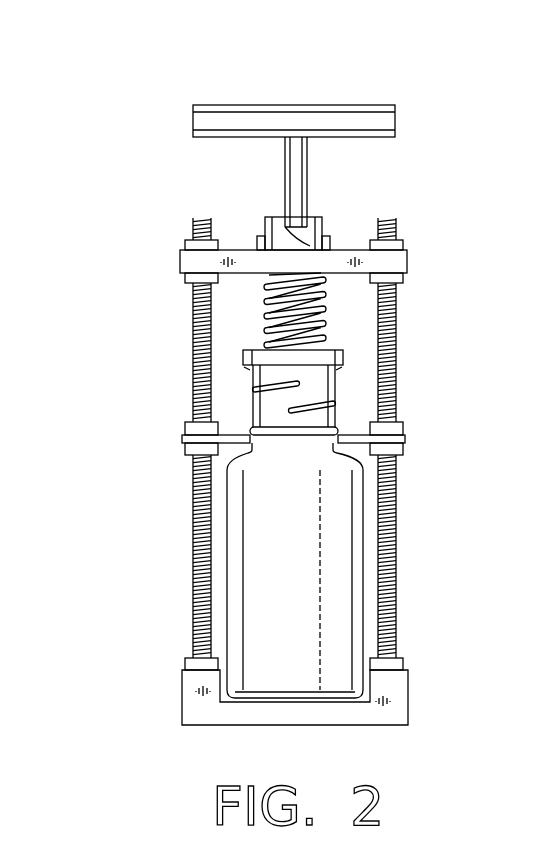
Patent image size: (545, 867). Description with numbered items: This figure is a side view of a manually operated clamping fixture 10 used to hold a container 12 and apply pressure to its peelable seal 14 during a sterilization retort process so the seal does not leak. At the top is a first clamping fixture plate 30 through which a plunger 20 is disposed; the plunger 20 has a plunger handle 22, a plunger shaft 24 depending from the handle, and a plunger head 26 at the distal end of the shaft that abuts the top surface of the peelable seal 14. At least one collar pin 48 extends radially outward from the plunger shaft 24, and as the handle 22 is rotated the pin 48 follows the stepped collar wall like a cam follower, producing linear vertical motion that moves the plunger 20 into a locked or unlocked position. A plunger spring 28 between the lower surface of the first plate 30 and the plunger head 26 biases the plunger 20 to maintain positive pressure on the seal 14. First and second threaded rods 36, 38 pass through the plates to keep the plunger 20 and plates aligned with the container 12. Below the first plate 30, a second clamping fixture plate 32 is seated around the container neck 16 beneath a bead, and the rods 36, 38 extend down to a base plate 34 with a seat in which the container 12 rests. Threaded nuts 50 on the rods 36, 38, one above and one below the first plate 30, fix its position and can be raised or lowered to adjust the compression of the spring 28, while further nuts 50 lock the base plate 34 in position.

The clamping fixture 10 is at (403, 92).
The container 12 is at (343, 583).
The peelable seal 14 is at (335, 370).
The container neck 16 is at (342, 411).
The plunger 20 is at (163, 126).
The plunger handle 22 is at (383, 122).
The plunger shaft 24 is at (290, 190).
The plunger head 26 is at (333, 349).
The plunger spring 28 is at (265, 314).
The first clamping fixture plate 30 is at (397, 261).
The second clamping fixture plate 32 is at (183, 438).
The base plate 34 is at (400, 715).
The first threaded rod 36 is at (200, 357).
The second threaded rod 38 is at (398, 315).
The collar pin 48 is at (327, 248).
The threaded nuts 50 is at (185, 279).